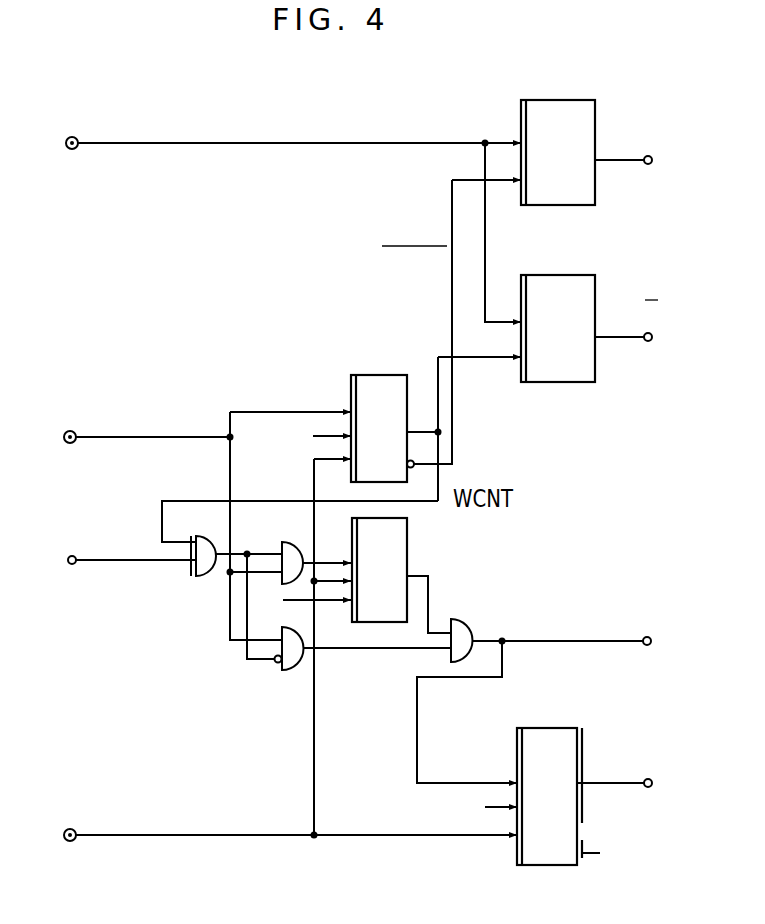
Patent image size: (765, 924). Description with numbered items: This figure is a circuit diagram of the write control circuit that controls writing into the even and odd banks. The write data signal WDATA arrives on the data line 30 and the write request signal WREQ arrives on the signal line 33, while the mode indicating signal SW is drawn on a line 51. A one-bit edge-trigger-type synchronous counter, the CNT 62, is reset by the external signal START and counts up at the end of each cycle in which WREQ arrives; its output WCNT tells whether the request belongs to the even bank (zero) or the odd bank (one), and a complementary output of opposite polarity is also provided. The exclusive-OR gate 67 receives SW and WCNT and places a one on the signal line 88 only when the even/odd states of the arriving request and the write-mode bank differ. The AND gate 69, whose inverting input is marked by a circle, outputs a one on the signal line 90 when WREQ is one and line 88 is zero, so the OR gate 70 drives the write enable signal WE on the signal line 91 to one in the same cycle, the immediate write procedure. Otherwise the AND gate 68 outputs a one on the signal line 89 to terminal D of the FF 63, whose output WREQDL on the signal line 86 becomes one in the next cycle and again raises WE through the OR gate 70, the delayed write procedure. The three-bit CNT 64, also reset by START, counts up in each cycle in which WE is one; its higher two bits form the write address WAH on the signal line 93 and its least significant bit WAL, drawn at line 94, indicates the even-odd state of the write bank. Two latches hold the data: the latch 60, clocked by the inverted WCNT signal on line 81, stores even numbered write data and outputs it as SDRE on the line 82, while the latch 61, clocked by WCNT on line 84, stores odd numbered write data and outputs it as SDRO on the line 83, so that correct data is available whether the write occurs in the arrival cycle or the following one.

The data line 30 is at (287, 141).
The signal line 33 is at (200, 436).
The switch signal line SW 51 is at (138, 563).
The latch 60 is at (580, 100).
The latch 61 is at (547, 275).
The CNT 62 is at (372, 375).
The FF 63 is at (408, 535).
The CNT 64 is at (556, 728).
The exclusive-OR gate 67 is at (206, 538).
The AND gate 68 is at (292, 542).
The AND gate 69 is at (290, 671).
The OR gate 70 is at (468, 624).
The counter output line to latch clock 81 is at (454, 432).
The line 82 is at (620, 163).
The line 83 is at (620, 340).
The latch clock input line 84 is at (468, 358).
The signal line 86 is at (430, 605).
The signal line 88 is at (258, 553).
The signal line 89 is at (332, 562).
The signal line 90 is at (345, 650).
The signal line 91 is at (566, 640).
The signal line 93 is at (612, 786).
The WAL output line 94 is at (604, 856).